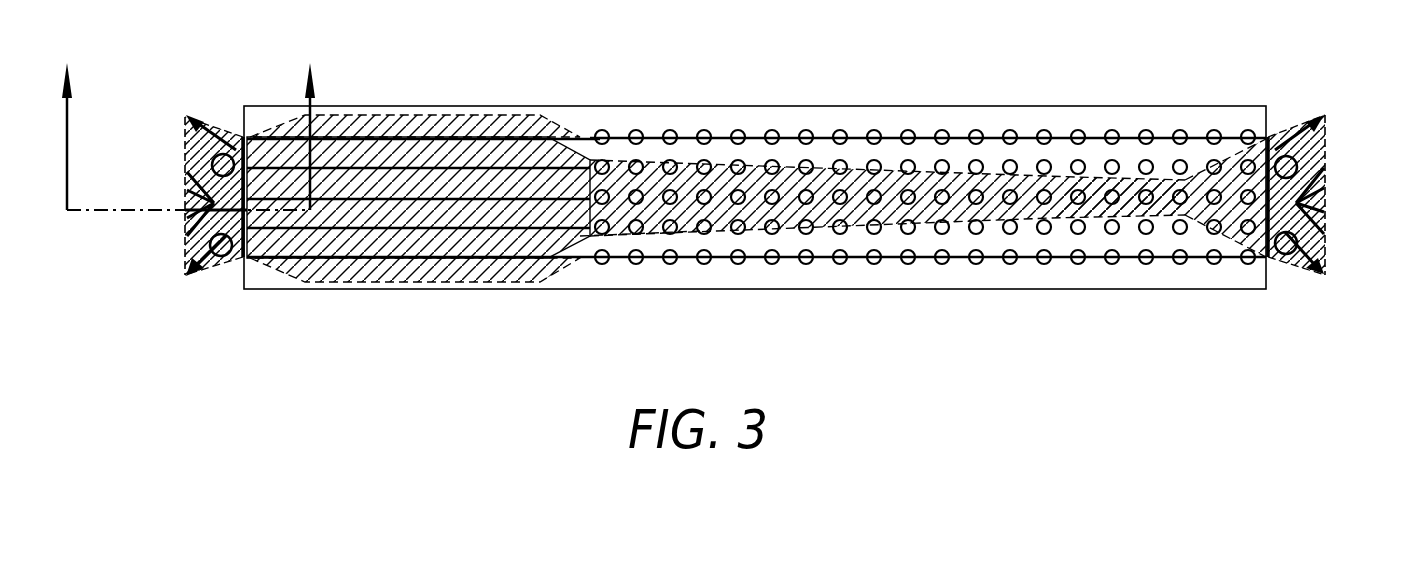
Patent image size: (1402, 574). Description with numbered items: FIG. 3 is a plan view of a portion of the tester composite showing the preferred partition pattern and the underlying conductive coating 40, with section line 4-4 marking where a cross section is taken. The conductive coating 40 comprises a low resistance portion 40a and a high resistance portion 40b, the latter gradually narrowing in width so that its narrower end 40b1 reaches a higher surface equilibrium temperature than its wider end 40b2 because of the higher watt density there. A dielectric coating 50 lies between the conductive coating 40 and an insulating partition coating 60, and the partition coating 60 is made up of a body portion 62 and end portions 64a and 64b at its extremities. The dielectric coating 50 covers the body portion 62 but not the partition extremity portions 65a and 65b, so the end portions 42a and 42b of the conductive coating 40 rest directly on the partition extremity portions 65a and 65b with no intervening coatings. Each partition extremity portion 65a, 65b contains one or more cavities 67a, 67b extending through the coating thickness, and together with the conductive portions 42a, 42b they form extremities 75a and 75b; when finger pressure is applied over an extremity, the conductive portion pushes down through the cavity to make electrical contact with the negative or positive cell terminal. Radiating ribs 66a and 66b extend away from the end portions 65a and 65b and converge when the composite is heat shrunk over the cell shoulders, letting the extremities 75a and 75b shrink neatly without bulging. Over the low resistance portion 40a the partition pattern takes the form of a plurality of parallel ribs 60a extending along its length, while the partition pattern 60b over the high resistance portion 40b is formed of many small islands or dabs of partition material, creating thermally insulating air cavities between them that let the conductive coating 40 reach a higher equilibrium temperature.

The section line 4- 4 is at (189, 123).
The conductive coating 40 is at (792, 162).
The low resistance portion 40a is at (410, 118).
The high resistance portion 40b is at (656, 163).
The narrower end 40b1 is at (1064, 175).
The wider end 40b2 is at (580, 236).
The conductive portion 42a is at (235, 137).
The conductive portion 42b is at (1270, 135).
The dielectric coating 50 is at (1003, 290).
The partition coating 60 is at (560, 139).
The parallel ribs 60a is at (418, 258).
The partition pattern 60b is at (866, 230).
The body portion 62 is at (893, 135).
The end portion 64a is at (192, 188).
The end portion 64b is at (1318, 178).
The partition extremity portion 65a is at (216, 133).
The partition extremity portion 65b is at (1294, 135).
The radiating ribs 66a is at (206, 270).
The radiating ribs 66b is at (1322, 252).
The cavity 67a is at (231, 232).
The cavity 67b is at (1300, 265).
The extremity 75a is at (190, 220).
The extremity 75b is at (1328, 216).